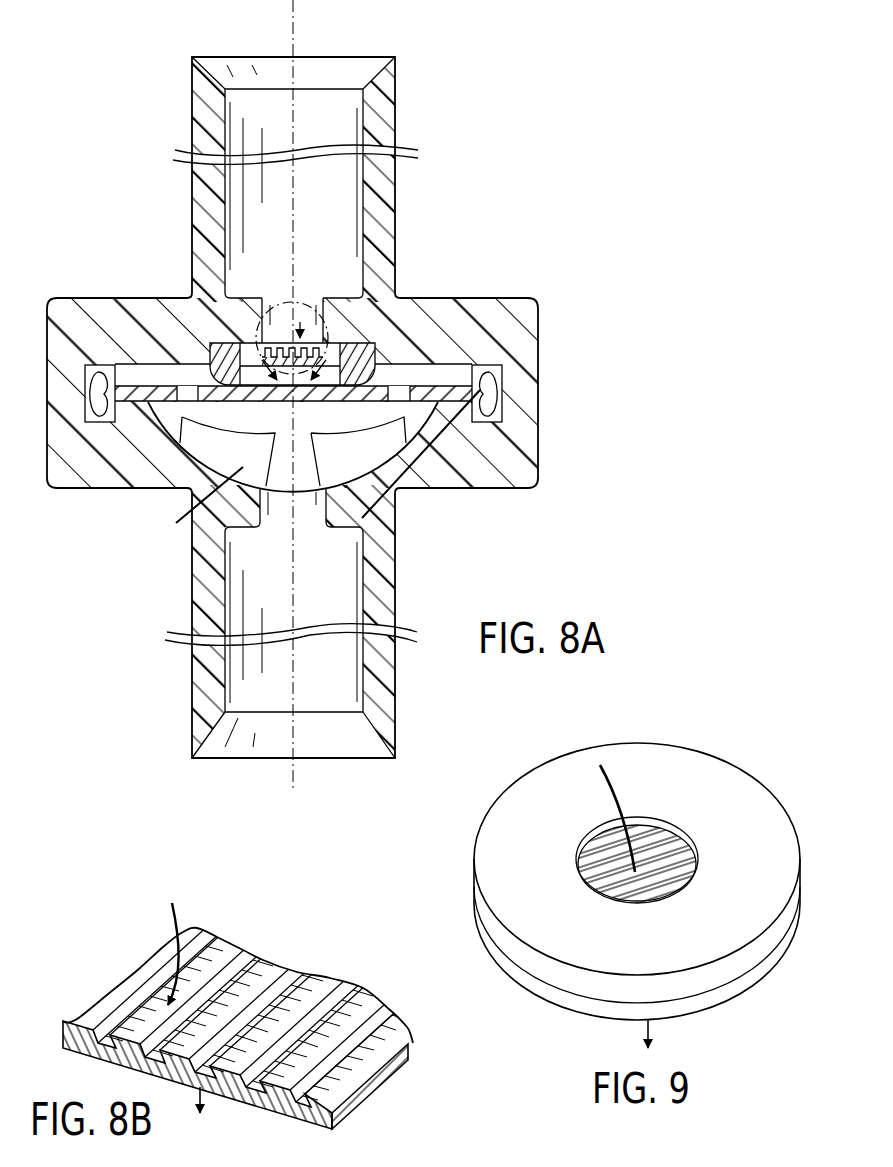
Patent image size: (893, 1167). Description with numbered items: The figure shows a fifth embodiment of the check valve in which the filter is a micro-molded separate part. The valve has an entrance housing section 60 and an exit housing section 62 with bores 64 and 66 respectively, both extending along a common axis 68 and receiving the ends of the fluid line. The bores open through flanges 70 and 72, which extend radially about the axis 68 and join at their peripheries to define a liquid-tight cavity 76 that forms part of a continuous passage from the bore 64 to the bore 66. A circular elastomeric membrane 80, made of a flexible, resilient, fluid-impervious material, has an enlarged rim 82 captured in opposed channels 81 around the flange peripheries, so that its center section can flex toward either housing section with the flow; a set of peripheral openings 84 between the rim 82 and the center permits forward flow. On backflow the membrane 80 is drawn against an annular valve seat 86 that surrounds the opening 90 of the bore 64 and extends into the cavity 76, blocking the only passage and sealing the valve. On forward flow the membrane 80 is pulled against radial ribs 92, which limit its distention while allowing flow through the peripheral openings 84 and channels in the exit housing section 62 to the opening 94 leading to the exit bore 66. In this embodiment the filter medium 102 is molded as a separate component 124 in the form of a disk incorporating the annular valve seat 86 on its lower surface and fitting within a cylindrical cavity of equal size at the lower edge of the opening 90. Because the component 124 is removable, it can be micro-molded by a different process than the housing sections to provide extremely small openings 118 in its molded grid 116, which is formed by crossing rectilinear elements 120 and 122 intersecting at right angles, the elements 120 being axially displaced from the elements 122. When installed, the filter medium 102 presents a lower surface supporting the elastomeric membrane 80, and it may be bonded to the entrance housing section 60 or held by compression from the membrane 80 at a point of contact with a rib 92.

In FIG. 8A, the entrance housing section 60 is at (396, 106).
In FIG. 8A, the exit housing section 62 is at (396, 690).
In FIG. 8A, the bore 64 is at (358, 88).
In FIG. 8A, the bore 66 is at (361, 682).
In FIG. 8A, the common axis 68 is at (291, 33).
In FIG. 8A, the flange 70 is at (532, 300).
In FIG. 8A, the flange 72 is at (535, 480).
In FIG. 8A, the liquid-tight cavity 76 is at (153, 370).
In FIG. 8A, the elastomeric membrane 80 is at (440, 382).
In FIG. 8A, the opposed channels 81 is at (100, 387).
In FIG. 8A, the enlarged rim 82 is at (487, 385).
In FIG. 8A, the peripheral openings 84 is at (195, 495).
In FIG. 8A, the annular valve seat 86 is at (193, 375).
In FIG. 9, the annular valve seat 86 is at (713, 1003).
In FIG. 8A, the opening 90 is at (268, 343).
In FIG. 8A, the radial ribs 92 is at (232, 490).
In FIG. 8A, the opening 94 is at (321, 503).
In FIG. 8A, the filter medium 102 is at (303, 305).
In FIG. 8B, the filter medium 102 is at (269, 997).
In FIG. 8B, the molded grid 116 is at (303, 963).
In FIG. 8B, the openings 118 is at (163, 1002).
In FIG. 8B, the rectilinear elements 120 is at (203, 935).
In FIG. 8B, the rectilinear elements 122 is at (372, 1072).
In FIG. 9, the separate component 124 is at (673, 743).